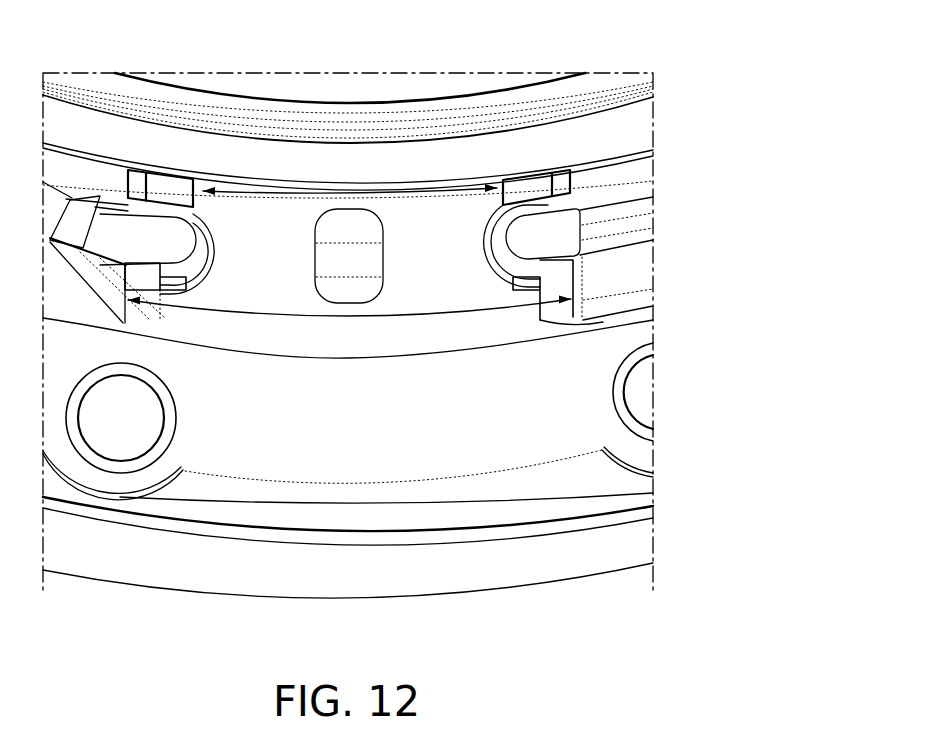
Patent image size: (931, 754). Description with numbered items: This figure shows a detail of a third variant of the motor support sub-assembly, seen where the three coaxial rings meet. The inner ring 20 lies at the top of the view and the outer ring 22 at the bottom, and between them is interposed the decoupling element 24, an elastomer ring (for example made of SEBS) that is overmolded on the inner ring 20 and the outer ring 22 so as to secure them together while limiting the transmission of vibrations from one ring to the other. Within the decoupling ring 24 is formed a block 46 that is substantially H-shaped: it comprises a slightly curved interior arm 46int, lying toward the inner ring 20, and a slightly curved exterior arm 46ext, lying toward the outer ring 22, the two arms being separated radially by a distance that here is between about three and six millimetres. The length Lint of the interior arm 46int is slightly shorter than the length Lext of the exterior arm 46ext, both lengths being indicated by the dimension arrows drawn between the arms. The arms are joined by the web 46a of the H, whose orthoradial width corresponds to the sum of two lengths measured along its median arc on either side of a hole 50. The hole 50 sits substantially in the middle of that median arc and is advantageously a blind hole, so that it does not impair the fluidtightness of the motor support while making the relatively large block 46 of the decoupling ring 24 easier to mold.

The inner ring 20 is at (388, 88).
The outer ring 22 is at (547, 420).
The decoupling element 24 is at (623, 277).
The block 46 is at (323, 440).
The interior arm 46int is at (270, 212).
The exterior arm 46ext is at (272, 327).
The web 46a is at (303, 258).
The hole 50 is at (353, 245).
The length of the interior arm Lint is at (323, 190).
The length of the exterior arm Lext is at (372, 313).